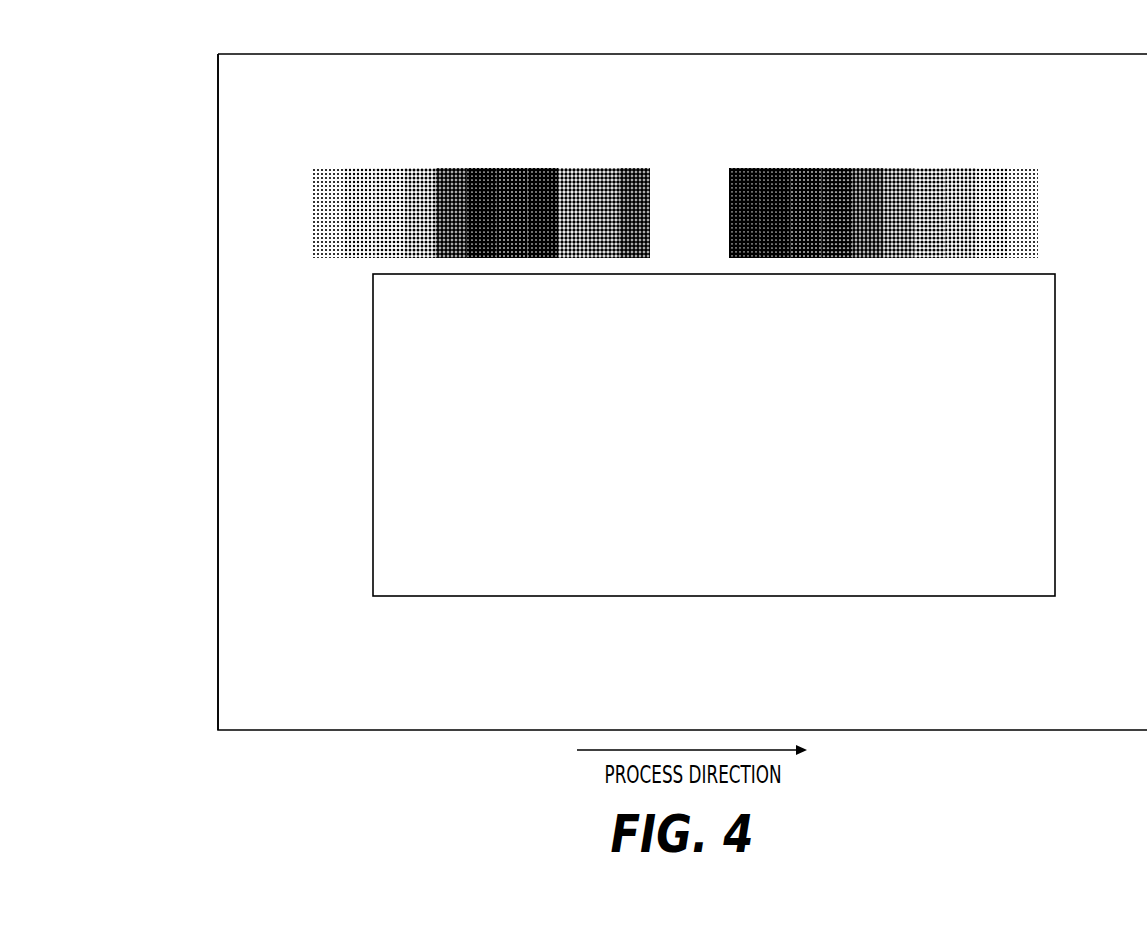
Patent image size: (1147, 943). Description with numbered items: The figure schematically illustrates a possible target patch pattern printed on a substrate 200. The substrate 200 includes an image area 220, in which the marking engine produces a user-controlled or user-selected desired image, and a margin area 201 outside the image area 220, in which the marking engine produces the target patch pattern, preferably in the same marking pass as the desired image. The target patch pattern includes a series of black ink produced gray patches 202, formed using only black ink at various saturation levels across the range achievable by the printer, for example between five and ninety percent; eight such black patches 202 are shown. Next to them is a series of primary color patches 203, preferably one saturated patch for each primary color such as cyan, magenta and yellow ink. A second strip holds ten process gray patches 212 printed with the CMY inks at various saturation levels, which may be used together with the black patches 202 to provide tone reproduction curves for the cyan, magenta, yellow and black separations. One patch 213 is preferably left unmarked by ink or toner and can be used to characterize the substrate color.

The substrate 200 is at (937, 54).
The margin area 201 is at (230, 140).
The black ink produced gray patches 202 is at (307, 141).
The primary color patches 203 is at (630, 168).
The process gray patches 212 is at (726, 141).
The unmarked patch 213 is at (1055, 170).
The image area 220 is at (873, 596).